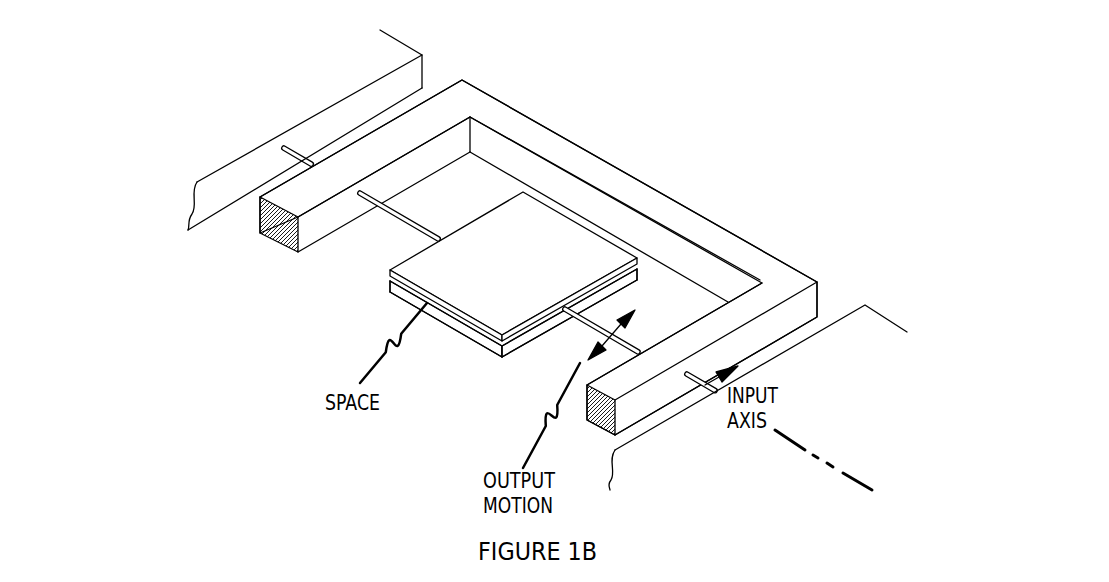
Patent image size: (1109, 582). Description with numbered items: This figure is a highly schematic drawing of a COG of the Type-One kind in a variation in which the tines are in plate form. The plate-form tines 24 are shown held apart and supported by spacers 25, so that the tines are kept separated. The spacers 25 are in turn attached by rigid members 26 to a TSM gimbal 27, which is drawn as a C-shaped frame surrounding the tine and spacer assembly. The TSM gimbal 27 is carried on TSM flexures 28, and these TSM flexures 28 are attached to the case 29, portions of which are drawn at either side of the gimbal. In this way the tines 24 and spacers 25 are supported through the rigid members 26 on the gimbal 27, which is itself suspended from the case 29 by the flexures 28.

The tines 24 is at (480, 285).
The spacers 25 is at (390, 283).
The rigid members 26 is at (387, 218).
The TSM gimbal 27 is at (652, 183).
The TSM flexures 28 is at (295, 145).
The case 29 is at (398, 37).